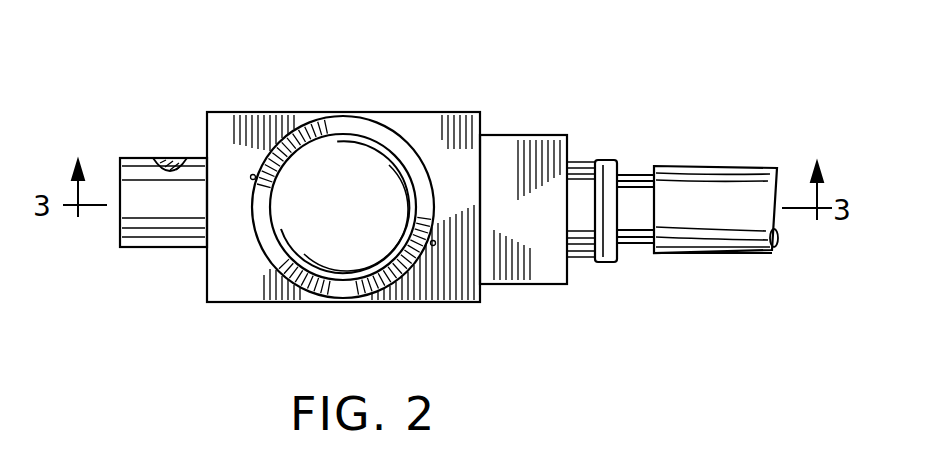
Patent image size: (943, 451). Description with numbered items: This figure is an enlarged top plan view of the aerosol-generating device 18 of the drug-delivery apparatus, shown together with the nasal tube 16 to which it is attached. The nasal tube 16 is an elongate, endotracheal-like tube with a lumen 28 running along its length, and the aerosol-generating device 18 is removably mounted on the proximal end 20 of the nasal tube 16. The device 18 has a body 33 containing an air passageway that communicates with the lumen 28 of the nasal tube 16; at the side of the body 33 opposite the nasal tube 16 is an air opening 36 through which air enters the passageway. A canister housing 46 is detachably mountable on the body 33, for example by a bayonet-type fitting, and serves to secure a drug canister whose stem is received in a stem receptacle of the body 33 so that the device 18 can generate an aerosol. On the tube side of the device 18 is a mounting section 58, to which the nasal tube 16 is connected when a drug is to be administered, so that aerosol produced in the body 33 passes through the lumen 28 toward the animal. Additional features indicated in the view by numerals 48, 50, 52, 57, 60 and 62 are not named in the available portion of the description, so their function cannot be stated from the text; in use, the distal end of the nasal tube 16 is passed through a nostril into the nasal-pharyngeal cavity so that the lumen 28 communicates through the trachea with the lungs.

The nasal tube 16 is at (722, 262).
The aerosol-generating device 18 is at (203, 119).
The proximal end 20 is at (672, 165).
The lumen 28 is at (792, 236).
The body 33 is at (262, 303).
The air opening 36 is at (118, 217).
The canister housing 46 is at (297, 130).
The junction points 48 is at (250, 175).
The inner ring 50 is at (380, 133).
The central bore 52 is at (359, 219).
The notch 57 is at (177, 162).
The mounting section 58 is at (568, 265).
The coupling nut 60 is at (582, 198).
The threaded stem 62 is at (613, 205).